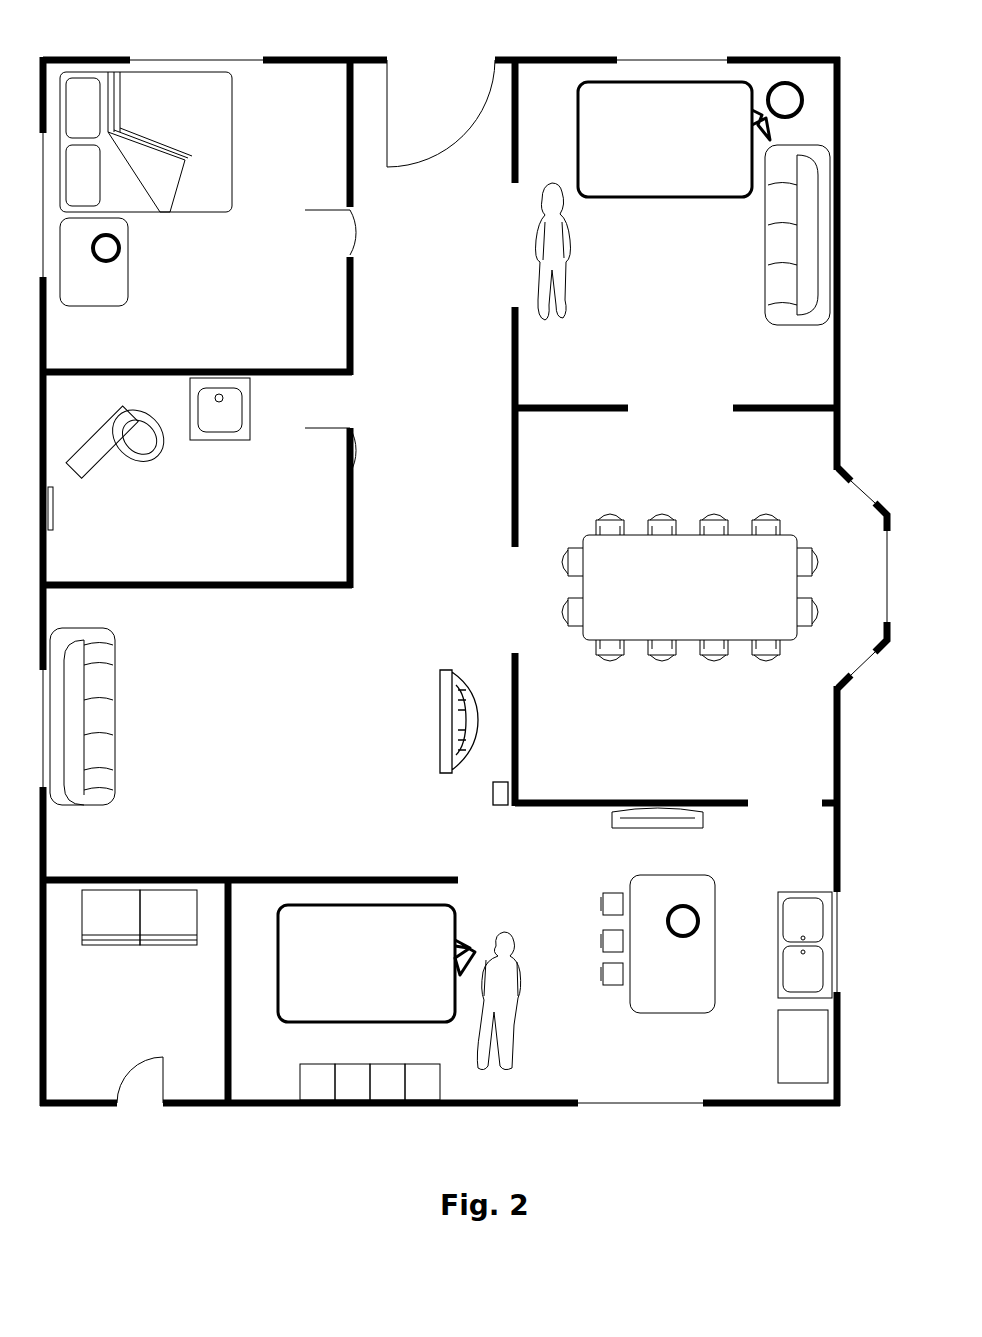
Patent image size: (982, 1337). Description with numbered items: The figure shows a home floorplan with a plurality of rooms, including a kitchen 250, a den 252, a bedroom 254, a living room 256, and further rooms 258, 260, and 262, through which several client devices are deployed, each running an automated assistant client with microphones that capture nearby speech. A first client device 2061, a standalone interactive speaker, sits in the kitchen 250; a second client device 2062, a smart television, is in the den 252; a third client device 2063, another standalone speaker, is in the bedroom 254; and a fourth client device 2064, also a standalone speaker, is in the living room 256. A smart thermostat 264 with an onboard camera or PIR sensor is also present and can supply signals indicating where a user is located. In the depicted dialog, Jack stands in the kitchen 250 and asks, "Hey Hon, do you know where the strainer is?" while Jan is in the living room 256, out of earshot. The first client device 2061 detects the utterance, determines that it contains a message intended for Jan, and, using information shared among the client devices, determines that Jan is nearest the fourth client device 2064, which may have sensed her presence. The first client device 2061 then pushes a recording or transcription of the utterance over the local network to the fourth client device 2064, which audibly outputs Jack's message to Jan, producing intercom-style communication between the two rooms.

The first client device 2061 is at (698, 917).
The second client device 2062 is at (470, 700).
The third client device 2063 is at (120, 248).
The fourth client device 2064 is at (796, 86).
The kitchen 250 is at (555, 987).
The den 252 is at (250, 754).
The bedroom 254 is at (269, 216).
The living room 256 is at (677, 302).
The room 258 is at (677, 639).
The room 260 is at (199, 483).
The room 262 is at (155, 991).
The smart thermostat 264 is at (500, 808).